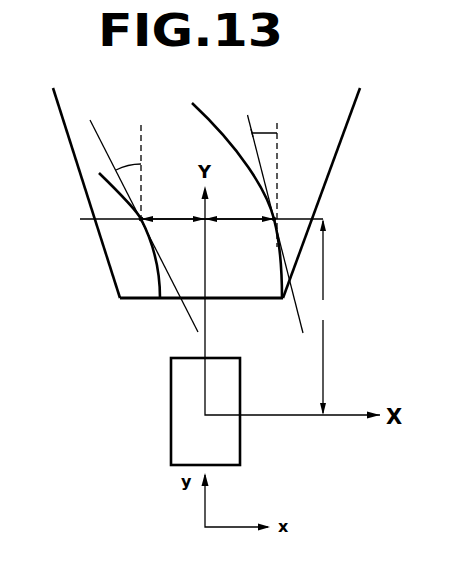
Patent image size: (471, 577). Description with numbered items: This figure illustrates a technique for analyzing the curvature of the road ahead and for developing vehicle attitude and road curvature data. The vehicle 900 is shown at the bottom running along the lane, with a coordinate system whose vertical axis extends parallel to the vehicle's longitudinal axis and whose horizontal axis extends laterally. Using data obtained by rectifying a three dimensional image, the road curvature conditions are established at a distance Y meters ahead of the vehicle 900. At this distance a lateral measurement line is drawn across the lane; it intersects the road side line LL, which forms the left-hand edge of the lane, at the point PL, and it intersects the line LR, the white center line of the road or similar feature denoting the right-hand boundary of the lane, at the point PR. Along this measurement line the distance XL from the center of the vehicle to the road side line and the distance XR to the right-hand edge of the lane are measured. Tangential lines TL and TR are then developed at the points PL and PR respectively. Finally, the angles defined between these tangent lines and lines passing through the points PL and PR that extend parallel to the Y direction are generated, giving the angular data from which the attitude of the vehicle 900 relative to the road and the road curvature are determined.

The vehicle 900 is at (171, 427).
The road side line LL is at (108, 183).
The line denoting right hand boundary of the lane LR is at (203, 110).
The tangential line TL is at (186, 304).
The tangential line TR is at (300, 315).
The point PL is at (141, 223).
The point PR is at (274, 222).
The distance from center of vehicle to road side line XL is at (173, 230).
The distance to right hand edge of the lane XR is at (239, 230).
The distance ahead of the vehicle Y is at (321, 317).